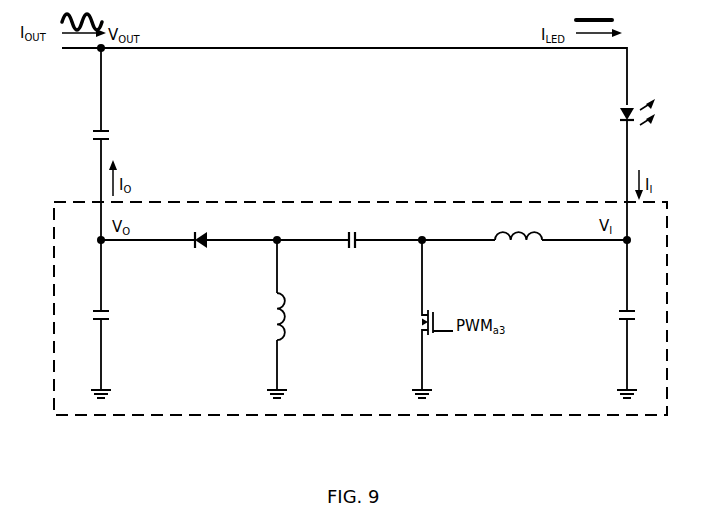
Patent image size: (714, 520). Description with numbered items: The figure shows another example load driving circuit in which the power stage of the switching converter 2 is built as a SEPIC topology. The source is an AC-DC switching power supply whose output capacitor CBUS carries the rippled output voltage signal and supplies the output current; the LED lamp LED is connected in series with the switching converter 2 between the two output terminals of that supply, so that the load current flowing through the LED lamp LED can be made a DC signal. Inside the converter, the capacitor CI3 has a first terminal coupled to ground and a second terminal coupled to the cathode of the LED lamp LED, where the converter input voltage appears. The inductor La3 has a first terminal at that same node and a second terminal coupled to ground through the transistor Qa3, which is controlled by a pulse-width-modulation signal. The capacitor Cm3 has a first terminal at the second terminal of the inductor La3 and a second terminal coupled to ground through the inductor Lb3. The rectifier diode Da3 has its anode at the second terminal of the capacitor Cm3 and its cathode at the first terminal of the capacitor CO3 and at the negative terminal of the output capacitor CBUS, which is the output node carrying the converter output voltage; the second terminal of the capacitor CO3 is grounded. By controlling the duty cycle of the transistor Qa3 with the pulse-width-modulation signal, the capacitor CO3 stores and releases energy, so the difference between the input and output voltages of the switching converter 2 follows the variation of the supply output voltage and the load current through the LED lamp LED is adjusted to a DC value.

The switching converter 2 is at (408, 200).
The output capacitor CBUS is at (82, 137).
The LED lamp LED is at (615, 112).
The rectifier diode Da3 is at (199, 230).
The capacitor CO3 is at (88, 321).
The inductor Lb3 is at (292, 316).
The capacitor Cm3 is at (352, 231).
The transistor Qa3 is at (422, 322).
The inductor La3 is at (518, 227).
The capacitor CI3 is at (615, 322).